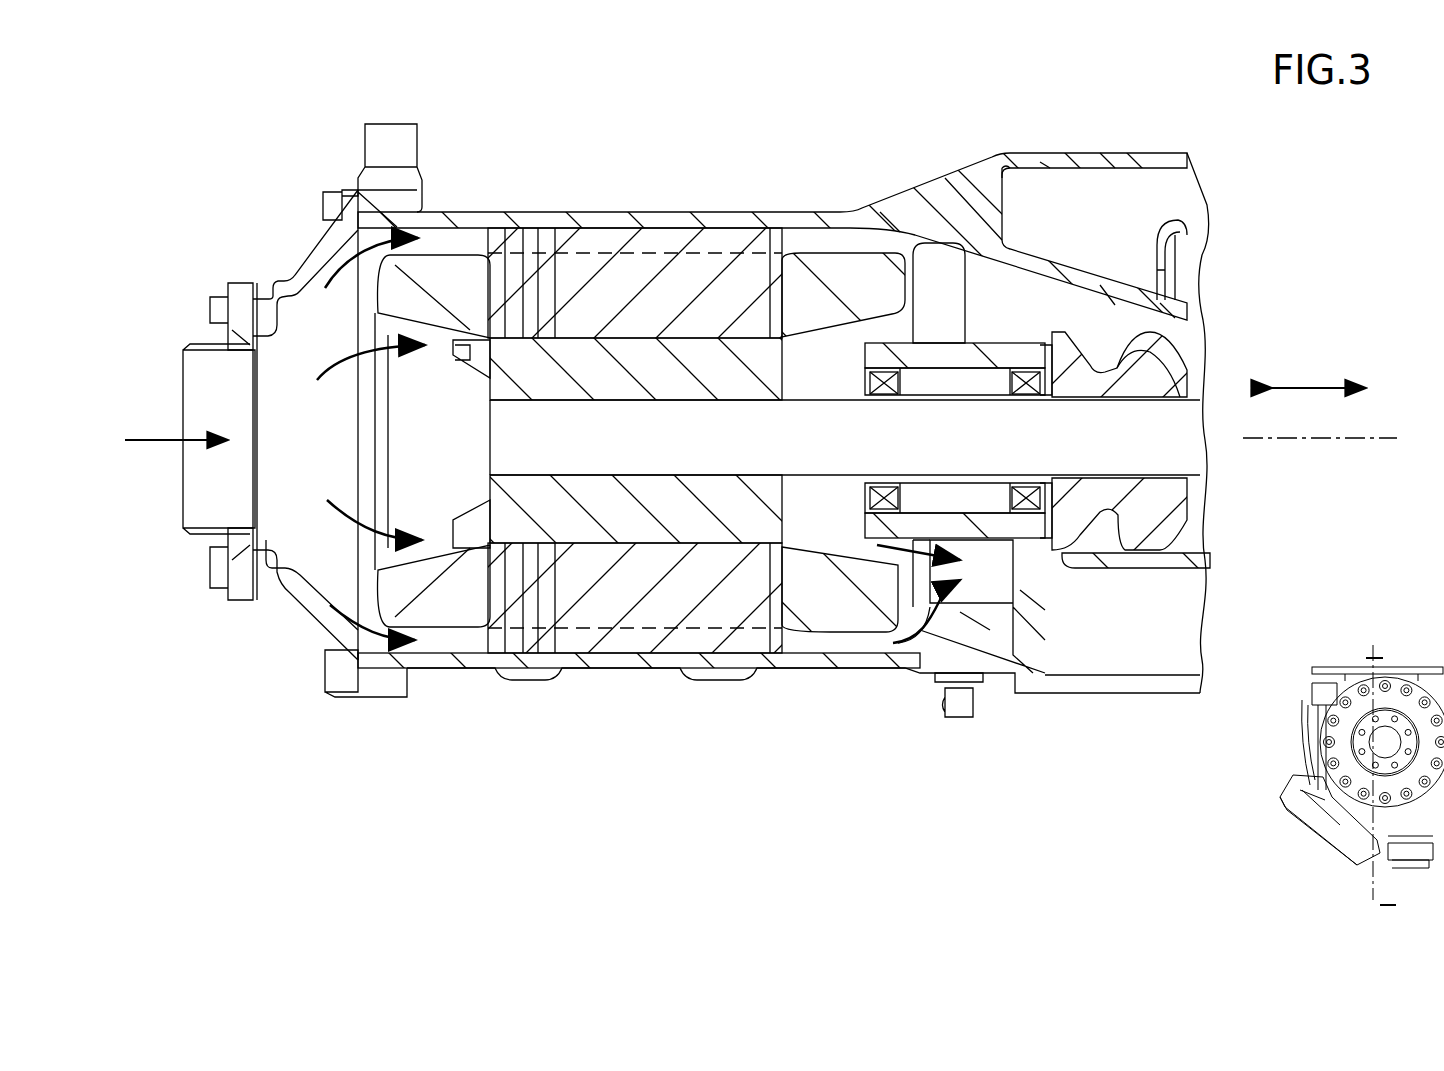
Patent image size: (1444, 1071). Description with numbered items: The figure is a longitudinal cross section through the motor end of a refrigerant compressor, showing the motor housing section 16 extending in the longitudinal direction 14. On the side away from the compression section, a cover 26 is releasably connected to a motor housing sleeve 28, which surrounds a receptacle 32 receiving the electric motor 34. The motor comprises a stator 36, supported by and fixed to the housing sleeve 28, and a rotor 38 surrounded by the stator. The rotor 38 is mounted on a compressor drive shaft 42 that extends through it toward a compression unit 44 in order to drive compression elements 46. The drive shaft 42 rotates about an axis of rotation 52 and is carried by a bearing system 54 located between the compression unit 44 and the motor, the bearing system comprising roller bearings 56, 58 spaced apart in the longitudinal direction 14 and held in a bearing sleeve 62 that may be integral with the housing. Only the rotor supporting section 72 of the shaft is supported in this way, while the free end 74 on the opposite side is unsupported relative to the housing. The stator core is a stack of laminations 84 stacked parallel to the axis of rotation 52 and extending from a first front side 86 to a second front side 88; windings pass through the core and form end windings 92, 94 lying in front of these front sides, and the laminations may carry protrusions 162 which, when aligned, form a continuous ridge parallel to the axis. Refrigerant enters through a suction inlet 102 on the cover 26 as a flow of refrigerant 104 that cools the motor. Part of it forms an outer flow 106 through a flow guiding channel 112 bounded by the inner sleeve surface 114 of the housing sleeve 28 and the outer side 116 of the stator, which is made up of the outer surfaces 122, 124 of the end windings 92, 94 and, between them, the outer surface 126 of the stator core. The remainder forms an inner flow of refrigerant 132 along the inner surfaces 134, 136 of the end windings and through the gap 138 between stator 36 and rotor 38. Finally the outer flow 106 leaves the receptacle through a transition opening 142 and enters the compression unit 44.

The longitudinal direction 14 is at (1318, 388).
The motor housing section 16 is at (600, 210).
The cover 26 is at (306, 625).
The motor housing sleeve 28 is at (577, 662).
The receptacle 32 is at (472, 632).
The electric motor 34 is at (661, 322).
The stator 36 is at (606, 590).
The rotor 38 is at (712, 376).
The compressor drive shaft 42 is at (705, 450).
The compression unit 44 is at (1168, 516).
The compression elements 46 is at (1135, 352).
The axis of rotation 52 is at (1308, 440).
The bearing system 54 is at (950, 492).
The roller bearing 56 is at (888, 372).
The roller bearing 58 is at (1025, 378).
The bearing sleeve 62 is at (1010, 530).
The rotor supporting section 72 is at (565, 450).
The free end 74 is at (520, 432).
The laminations 84 is at (497, 240).
The first front side 86 is at (470, 290).
The second front side 88 is at (822, 300).
The end winding 92 is at (393, 290).
The end winding 94 is at (940, 305).
The suction inlet 102 is at (205, 362).
The flow of refrigerant 104 is at (142, 440).
The outer flow 106 is at (373, 650).
The flow guiding channel 112 is at (660, 252).
The inner sleeve surface 114 is at (468, 240).
The outer side 116 is at (568, 245).
The outer surface 122 is at (428, 250).
The outer surface 124 is at (845, 250).
The outer surface 126 is at (732, 250).
The inner flow of refrigerant 132 is at (348, 350).
The inner surface 134 is at (443, 550).
The inner surface 136 is at (833, 545).
The gap 138 is at (625, 250).
The transition opening 142 is at (1003, 568).
The protrusions 162 is at (530, 250).